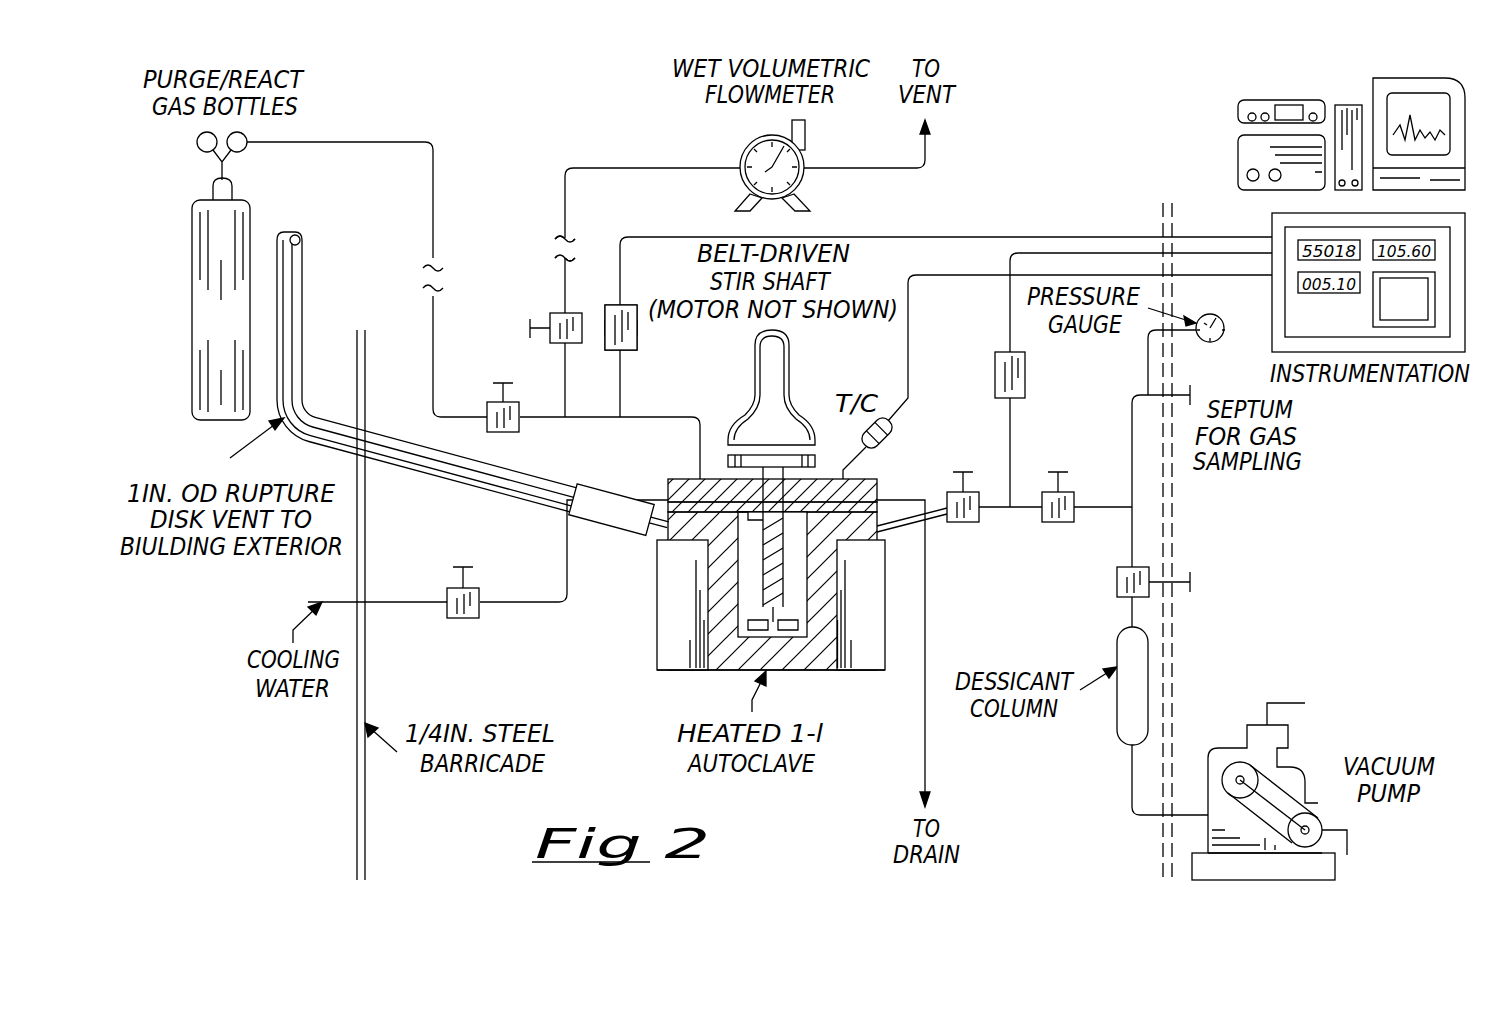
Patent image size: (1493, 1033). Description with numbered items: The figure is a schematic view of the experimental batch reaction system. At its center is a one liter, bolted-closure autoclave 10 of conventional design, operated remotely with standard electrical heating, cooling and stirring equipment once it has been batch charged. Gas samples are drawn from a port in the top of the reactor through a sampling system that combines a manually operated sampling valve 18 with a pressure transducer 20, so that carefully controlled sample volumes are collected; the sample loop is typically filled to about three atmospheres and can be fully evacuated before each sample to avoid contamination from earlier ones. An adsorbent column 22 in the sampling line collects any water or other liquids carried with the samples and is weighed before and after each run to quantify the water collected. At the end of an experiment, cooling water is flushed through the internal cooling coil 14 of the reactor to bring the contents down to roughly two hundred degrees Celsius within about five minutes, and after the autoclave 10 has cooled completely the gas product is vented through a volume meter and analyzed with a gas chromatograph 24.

The autoclave 10 is at (655, 632).
The internal cooling coil 14 is at (567, 545).
The sampling valve 18 is at (972, 522).
The pressure transducer 20 is at (995, 378).
The adsorbent column 22 is at (1127, 723).
The gas chromatograph 24 is at (1208, 145).